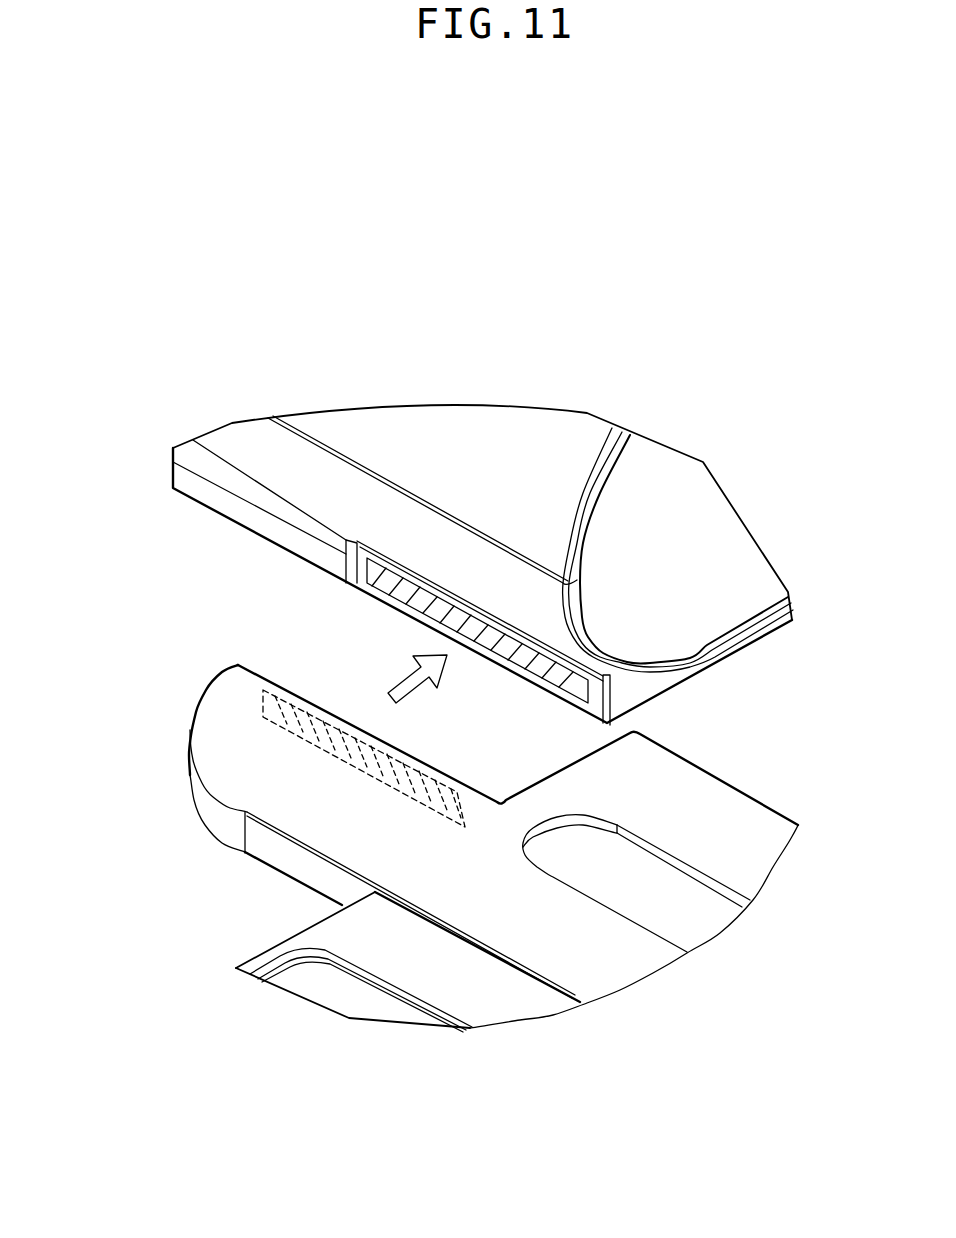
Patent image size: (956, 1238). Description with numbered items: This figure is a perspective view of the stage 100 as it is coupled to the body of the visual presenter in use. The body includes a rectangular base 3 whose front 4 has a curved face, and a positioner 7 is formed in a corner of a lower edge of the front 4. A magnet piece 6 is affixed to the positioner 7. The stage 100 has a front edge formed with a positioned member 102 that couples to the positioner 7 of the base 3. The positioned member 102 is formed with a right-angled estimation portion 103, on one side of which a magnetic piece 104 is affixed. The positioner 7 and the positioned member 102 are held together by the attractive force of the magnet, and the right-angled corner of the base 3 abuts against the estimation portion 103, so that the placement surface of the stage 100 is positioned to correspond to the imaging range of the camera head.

The base 3 is at (688, 510).
The front 4 is at (403, 447).
The magnet piece 6 is at (397, 592).
The positioner 7 is at (598, 698).
The stage 100 is at (322, 937).
The positioned member 102 is at (283, 784).
The estimation portion 103 is at (458, 777).
The magnetic piece 104 is at (335, 763).